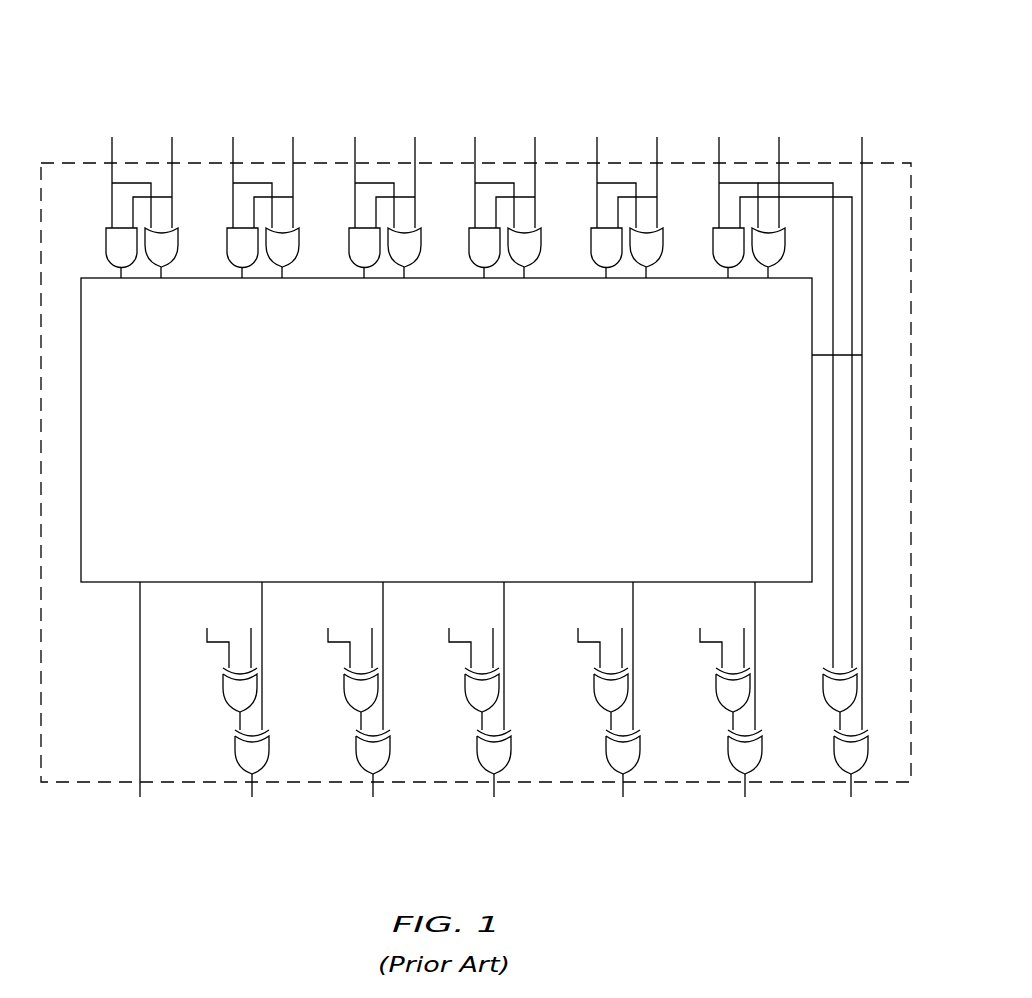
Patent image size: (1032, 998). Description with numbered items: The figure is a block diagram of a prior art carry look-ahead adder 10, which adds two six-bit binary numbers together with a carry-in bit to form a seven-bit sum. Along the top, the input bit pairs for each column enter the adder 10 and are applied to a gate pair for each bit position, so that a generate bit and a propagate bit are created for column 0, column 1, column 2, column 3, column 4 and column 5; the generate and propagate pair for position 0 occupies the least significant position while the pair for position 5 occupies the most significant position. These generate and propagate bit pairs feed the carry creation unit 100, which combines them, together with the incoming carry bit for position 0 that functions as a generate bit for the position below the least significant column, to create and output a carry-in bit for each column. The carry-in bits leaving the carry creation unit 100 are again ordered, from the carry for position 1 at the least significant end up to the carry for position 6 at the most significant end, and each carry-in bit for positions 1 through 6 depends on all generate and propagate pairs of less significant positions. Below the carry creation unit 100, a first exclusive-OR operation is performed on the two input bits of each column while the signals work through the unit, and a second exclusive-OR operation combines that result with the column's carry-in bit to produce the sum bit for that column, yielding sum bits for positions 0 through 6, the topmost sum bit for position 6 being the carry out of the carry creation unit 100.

The carry look-ahead adder 10 is at (452, 162).
The carry creation unit 100 is at (468, 458).
The bit 0 slice 0 is at (791, 473).
The bit 1 slice 1 is at (676, 473).
The bit 2 slice 2 is at (554, 473).
The bit 3 slice 3 is at (430, 473).
The bit 4 slice 4 is at (309, 473).
The bit 5 slice 5 is at (187, 473).
The carry out 6 is at (141, 694).